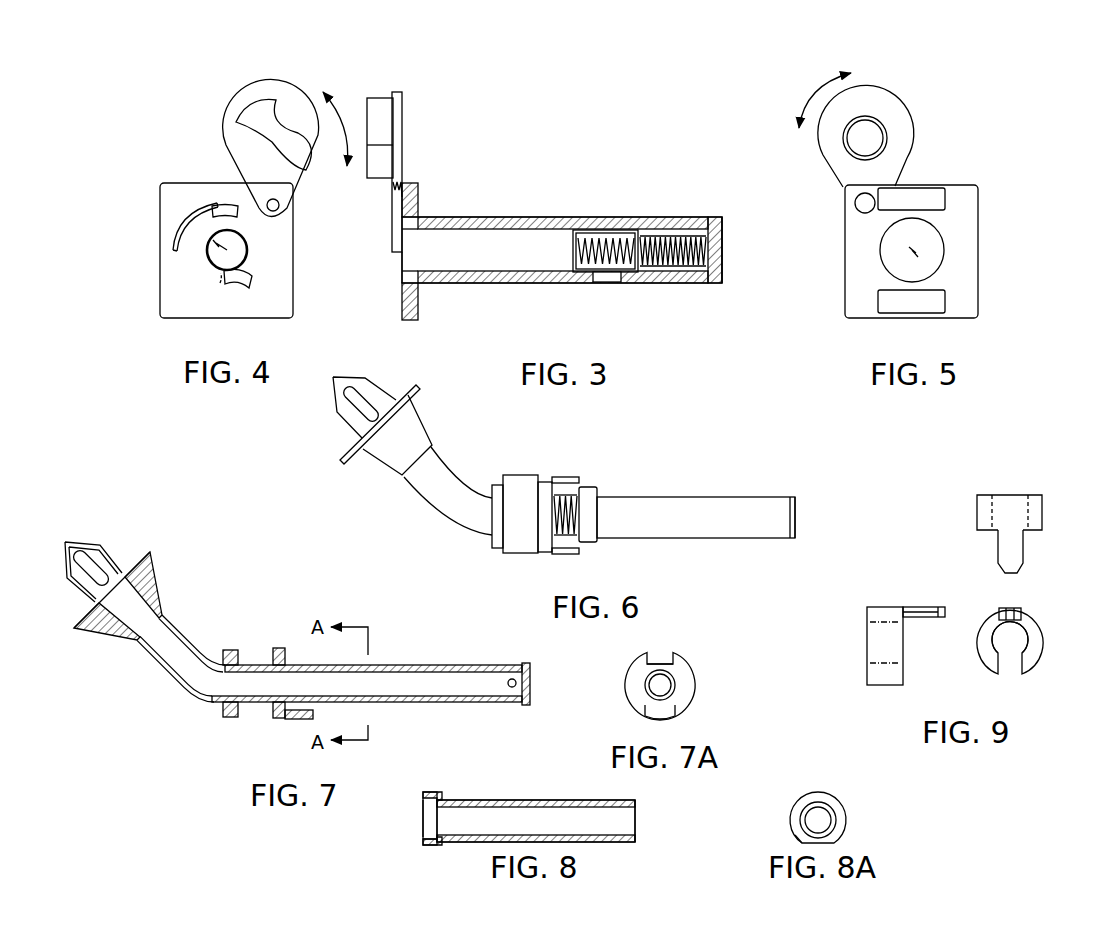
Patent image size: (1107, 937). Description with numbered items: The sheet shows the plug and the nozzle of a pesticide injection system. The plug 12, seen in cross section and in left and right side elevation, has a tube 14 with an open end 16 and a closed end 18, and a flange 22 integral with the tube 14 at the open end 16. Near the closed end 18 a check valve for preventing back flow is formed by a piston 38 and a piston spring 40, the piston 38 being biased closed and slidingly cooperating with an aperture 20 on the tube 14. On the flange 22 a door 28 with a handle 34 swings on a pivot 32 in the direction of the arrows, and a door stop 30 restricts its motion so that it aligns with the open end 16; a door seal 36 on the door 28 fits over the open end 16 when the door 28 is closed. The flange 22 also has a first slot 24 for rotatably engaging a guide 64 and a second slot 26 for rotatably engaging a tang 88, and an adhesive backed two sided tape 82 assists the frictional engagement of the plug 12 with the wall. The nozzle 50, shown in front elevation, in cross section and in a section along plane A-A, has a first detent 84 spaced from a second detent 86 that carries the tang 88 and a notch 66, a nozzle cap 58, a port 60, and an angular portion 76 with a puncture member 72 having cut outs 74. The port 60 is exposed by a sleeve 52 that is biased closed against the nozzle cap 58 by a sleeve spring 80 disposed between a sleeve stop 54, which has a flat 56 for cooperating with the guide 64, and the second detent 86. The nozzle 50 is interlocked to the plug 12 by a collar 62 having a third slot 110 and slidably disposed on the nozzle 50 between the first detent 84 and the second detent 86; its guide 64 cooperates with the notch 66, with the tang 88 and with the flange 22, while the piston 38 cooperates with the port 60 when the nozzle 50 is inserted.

In FIG. 3, the plug 12 is at (507, 187).
In FIG. 3, the tube 14 is at (490, 283).
In FIG. 5, the tube 14 is at (915, 250).
In FIG. 3, the open end 16 is at (402, 266).
In FIG. 8, the open end 16 is at (423, 826).
In FIG. 3, the closed end 18 is at (722, 258).
In FIG. 8, the closed end 18 is at (635, 822).
In FIG. 3, the aperture 20 is at (608, 284).
In FIG. 4, the flange 22 is at (201, 304).
In FIG. 3, the flange 22 is at (418, 200).
In FIG. 5, the flange 22 is at (872, 275).
In FIG. 4, the first slot 24 is at (225, 205).
In FIG. 4, the second slot 26 is at (238, 287).
In FIG. 4, the door 28 is at (232, 101).
In FIG. 3, the door 28 is at (405, 100).
In FIG. 5, the door 28 is at (818, 151).
In FIG. 4, the door stop 30 is at (188, 214).
In FIG. 4, the pivot 32 is at (280, 207).
In FIG. 5, the pivot 32 is at (855, 208).
In FIG. 4, the handle 34 is at (268, 110).
In FIG. 3, the handle 34 is at (372, 98).
In FIG. 5, the door seal 36 is at (880, 118).
In FIG. 4, the piston 38 is at (218, 238).
In FIG. 3, the piston 38 is at (598, 230).
In FIG. 3, the piston spring 40 is at (662, 236).
In FIG. 6, the nozzle 50 is at (430, 513).
In FIG. 7, the nozzle 50 is at (301, 639).
In FIG. 6, the sleeve 52 is at (673, 497).
In FIG. 8, the sleeve 52 is at (530, 800).
In FIG. 8A, the sleeve 52 is at (805, 800).
In FIG. 6, the sleeve stop 54 is at (597, 487).
In FIG. 8, the sleeve stop 54 is at (442, 796).
In FIG. 8A, the sleeve stop 54 is at (838, 805).
In FIG. 8, the flat 56 is at (430, 845).
In FIG. 8A, the flat 56 is at (798, 836).
In FIG. 6, the nozzle cap 58 is at (795, 520).
In FIG. 7, the nozzle cap 58 is at (530, 690).
In FIG. 7, the port 60 is at (519, 698).
In FIG. 6, the collar 62 is at (521, 474).
In FIG. 9, the collar 62 is at (880, 607).
In FIG. 9, the guide 64 is at (1036, 495).
In FIG. 7, the notch 66 is at (277, 648).
In FIG. 7A, the notch 66 is at (662, 658).
In FIG. 9, the notch 66 is at (1023, 553).
In FIG. 7, the puncture member 72 is at (85, 543).
In FIG. 7, the cut outs 74 is at (90, 575).
In FIG. 7, the angular portion 76 is at (110, 632).
In FIG. 6, the sleeve spring 80 is at (565, 495).
In FIG. 5, the adhesive backed two sided tape 82 is at (945, 198).
In FIG. 6, the first detent 84 is at (494, 548).
In FIG. 7, the first detent 84 is at (228, 650).
In FIG. 6, the second detent 86 is at (546, 556).
In FIG. 7, the second detent 86 is at (272, 722).
In FIG. 7A, the second detent 86 is at (698, 676).
In FIG. 6, the tang 88 is at (575, 553).
In FIG. 7, the tang 88 is at (300, 719).
In FIG. 7A, the tang 88 is at (670, 709).
In FIG. 9, the third slot 110 is at (1027, 643).